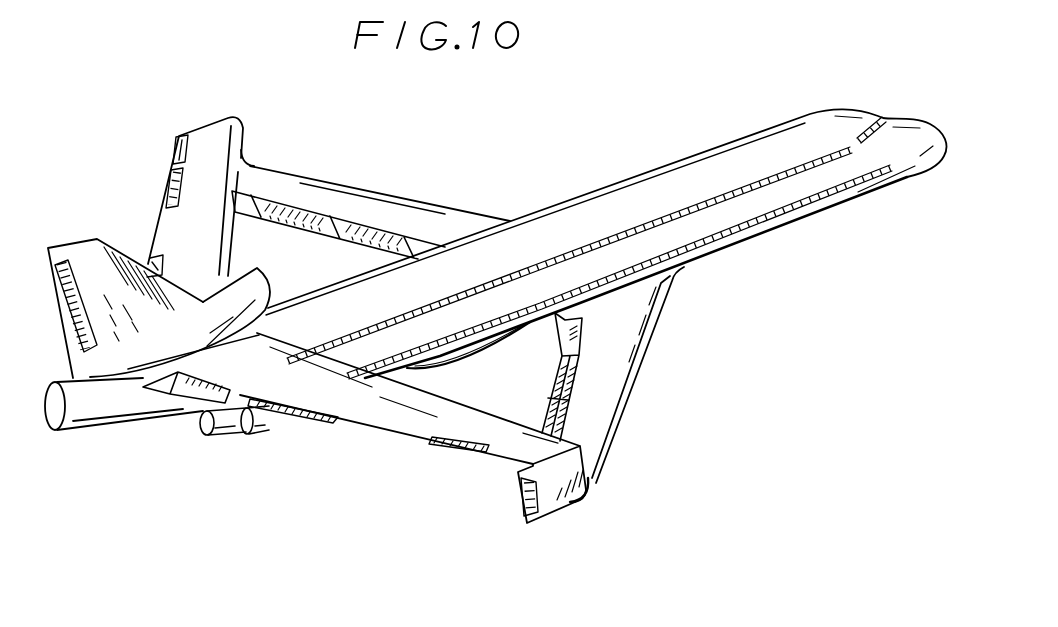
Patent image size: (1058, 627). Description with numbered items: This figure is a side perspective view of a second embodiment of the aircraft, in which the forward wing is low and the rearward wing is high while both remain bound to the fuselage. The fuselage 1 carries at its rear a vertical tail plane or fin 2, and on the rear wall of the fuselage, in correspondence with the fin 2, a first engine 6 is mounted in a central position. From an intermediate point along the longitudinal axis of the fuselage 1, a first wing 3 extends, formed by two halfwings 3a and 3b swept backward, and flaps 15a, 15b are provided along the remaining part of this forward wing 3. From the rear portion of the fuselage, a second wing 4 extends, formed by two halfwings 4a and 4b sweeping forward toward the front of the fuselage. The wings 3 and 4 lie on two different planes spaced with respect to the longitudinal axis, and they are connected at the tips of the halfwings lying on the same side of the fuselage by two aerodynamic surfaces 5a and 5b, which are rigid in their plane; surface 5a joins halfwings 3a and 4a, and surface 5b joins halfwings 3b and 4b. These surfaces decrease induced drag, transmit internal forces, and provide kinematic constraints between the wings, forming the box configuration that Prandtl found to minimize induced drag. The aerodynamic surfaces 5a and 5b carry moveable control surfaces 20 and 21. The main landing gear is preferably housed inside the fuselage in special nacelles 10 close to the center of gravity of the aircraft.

The fuselage 1 is at (634, 195).
The vertical tail plane or fin 2 is at (84, 244).
The first wing 3 is at (348, 185).
The halfwing 3a is at (606, 429).
The halfwing 3b is at (412, 206).
The second wing 4 is at (403, 437).
The halfwing 4a is at (348, 423).
The halfwing 4b is at (215, 134).
The aerodynamic surface 5a is at (587, 500).
The aerodynamic surface 5b is at (250, 147).
The first engine 6 is at (252, 296).
The nacelle 10 is at (472, 358).
The flap 15a is at (568, 402).
The flap 15b is at (340, 224).
The moveable control surface 20 is at (520, 497).
The moveable control surface 21 is at (177, 142).